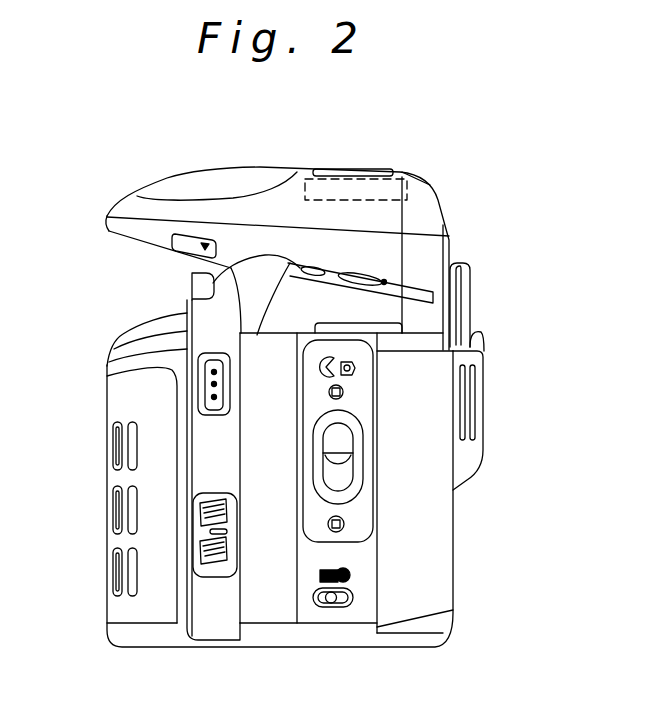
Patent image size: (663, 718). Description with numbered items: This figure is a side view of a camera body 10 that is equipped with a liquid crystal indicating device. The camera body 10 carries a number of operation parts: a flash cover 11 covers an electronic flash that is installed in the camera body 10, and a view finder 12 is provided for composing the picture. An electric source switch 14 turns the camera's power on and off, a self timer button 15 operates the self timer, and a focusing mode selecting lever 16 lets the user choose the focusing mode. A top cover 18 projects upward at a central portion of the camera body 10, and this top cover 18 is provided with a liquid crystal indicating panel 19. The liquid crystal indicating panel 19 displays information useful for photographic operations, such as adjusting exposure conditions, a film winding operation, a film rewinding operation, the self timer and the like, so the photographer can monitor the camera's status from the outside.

The camera body 10 is at (476, 311).
The flash cover 11 is at (200, 188).
The view finder 12 is at (466, 286).
The electric source switch 14 is at (375, 273).
The self timer button 15 is at (200, 280).
The focusing mode selecting lever 16 is at (207, 530).
The top cover 18 is at (423, 200).
The liquid crystal indicating panel 19 is at (362, 172).